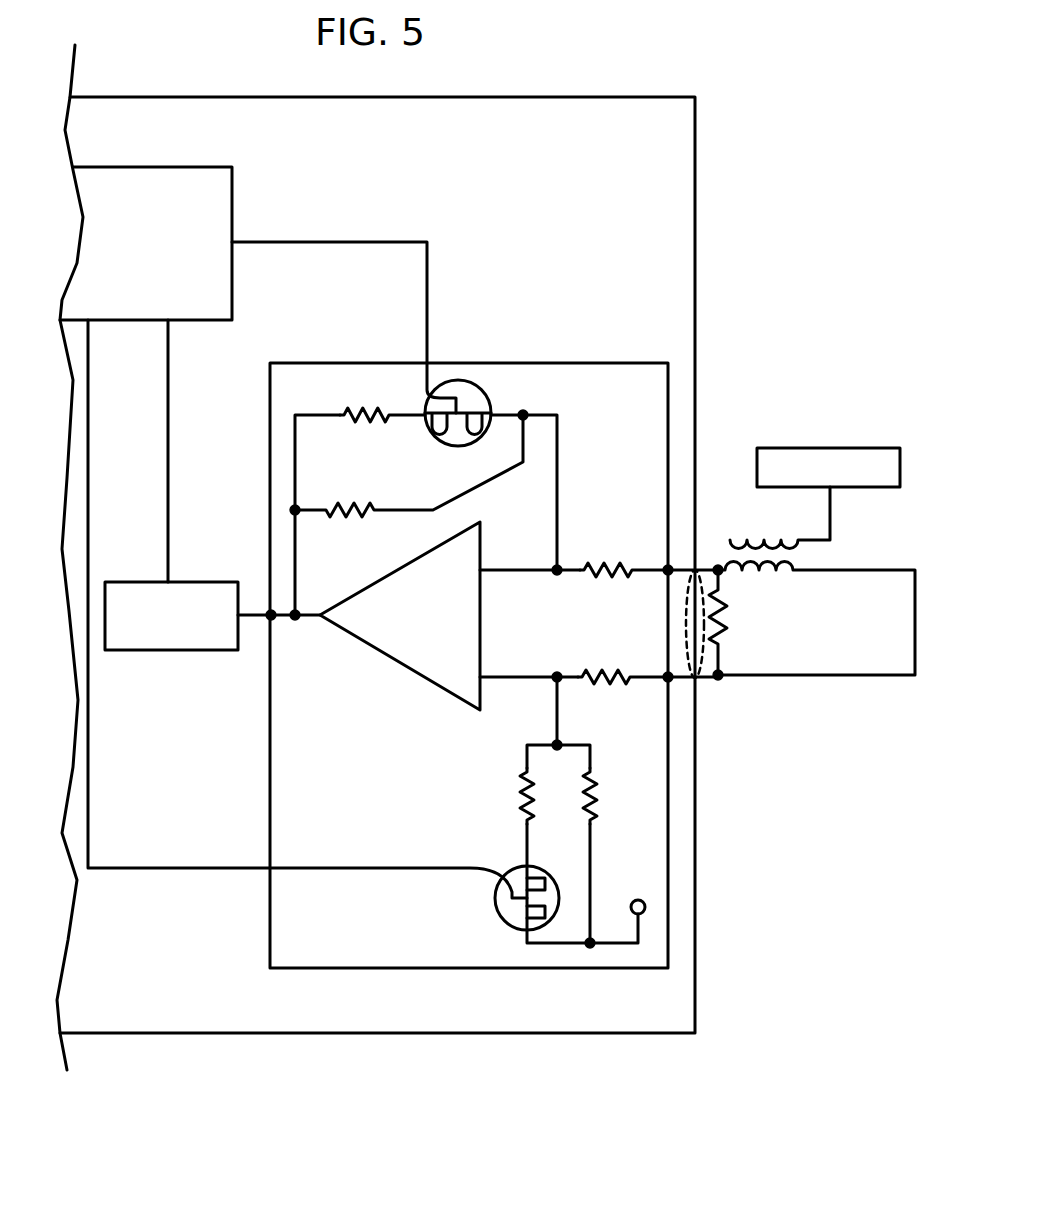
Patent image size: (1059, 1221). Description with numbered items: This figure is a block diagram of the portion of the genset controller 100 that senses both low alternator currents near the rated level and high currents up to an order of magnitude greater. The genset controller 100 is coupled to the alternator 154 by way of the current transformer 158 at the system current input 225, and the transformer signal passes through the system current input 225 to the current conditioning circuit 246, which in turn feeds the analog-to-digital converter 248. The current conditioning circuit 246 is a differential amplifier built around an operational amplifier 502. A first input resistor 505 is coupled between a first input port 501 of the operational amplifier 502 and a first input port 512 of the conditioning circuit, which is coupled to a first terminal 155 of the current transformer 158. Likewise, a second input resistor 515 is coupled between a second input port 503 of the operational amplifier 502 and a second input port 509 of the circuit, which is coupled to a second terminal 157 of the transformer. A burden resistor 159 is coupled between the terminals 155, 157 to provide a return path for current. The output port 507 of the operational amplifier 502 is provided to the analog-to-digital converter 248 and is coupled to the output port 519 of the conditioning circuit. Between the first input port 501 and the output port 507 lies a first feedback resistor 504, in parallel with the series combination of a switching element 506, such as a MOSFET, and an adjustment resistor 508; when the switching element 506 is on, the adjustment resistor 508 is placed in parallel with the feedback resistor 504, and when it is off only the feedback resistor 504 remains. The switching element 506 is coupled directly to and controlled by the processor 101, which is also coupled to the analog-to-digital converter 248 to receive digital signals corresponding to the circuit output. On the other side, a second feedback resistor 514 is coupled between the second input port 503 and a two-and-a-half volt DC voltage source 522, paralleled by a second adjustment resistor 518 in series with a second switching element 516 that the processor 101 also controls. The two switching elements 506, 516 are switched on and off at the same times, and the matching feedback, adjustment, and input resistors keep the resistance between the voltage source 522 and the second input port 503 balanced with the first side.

The genset controller 100 is at (702, 727).
The processor 101 is at (237, 182).
The alternator 154 is at (858, 446).
The first terminal 155 is at (719, 562).
The second terminal 157 is at (726, 684).
The current transformer 158 is at (757, 535).
The burden resistor 159 is at (735, 630).
The system current input 225 is at (697, 560).
The current conditioning circuit 246 is at (407, 360).
The analog-to-digital converter 248 is at (136, 578).
The first input port 501 is at (515, 572).
The operational amplifier 502 is at (472, 712).
The second input port 503 is at (512, 676).
The first feedback resistor 504 is at (338, 532).
The first input resistor 505 is at (585, 556).
The switching element 506 is at (480, 392).
The output port 507 is at (292, 628).
The adjustment resistor 508 is at (340, 400).
The second input port 509 is at (664, 686).
The first input port 512 is at (657, 563).
The second feedback resistor 514 is at (607, 813).
The second input resistor 515 is at (605, 662).
The second switching element 516 is at (497, 916).
The second adjustment resistor 518 is at (511, 824).
The output port 519 is at (265, 605).
The 2.5 Volt DC voltage source 522 is at (648, 914).